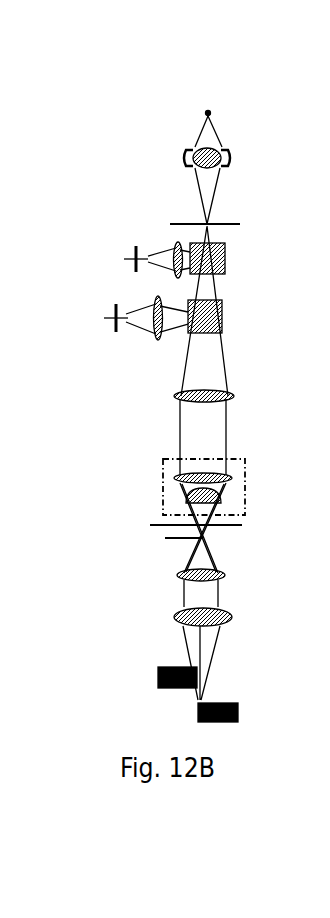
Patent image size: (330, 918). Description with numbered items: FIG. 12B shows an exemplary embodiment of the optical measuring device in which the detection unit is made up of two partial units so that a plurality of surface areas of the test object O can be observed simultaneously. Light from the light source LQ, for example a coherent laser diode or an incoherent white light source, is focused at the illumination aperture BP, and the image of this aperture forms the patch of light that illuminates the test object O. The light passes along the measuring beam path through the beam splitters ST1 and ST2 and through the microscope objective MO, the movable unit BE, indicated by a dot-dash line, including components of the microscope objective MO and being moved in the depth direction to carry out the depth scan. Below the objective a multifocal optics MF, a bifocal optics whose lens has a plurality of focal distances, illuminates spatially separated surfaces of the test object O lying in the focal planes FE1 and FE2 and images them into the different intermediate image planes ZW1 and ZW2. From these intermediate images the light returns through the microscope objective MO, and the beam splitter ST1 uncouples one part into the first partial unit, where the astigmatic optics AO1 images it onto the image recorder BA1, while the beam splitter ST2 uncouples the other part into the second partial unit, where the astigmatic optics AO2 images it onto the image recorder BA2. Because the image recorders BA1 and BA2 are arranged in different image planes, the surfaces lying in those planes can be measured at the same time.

The light source LQ is at (216, 103).
The illumination aperture BP is at (233, 212).
The astigmatic optics AO1 is at (170, 242).
The image recorder BA1 is at (130, 243).
The beam splitter ST1 is at (237, 262).
The image recorder BA2 is at (114, 303).
The beam splitter ST2 is at (237, 322).
The astigmatic optics AO2 is at (150, 336).
The movable unit BE is at (240, 453).
The microscope objective MO is at (182, 497).
The intermediate image plane ZW1 is at (236, 535).
The intermediate image plane ZW2 is at (158, 533).
The multifocal optics MF is at (243, 605).
The focal plane FE1 is at (191, 663).
The focal plane FE2 is at (247, 705).
The test object O is at (262, 712).